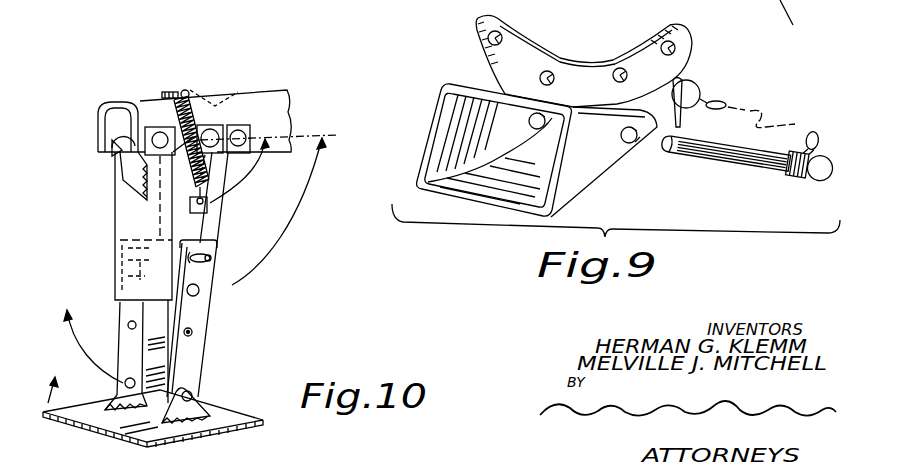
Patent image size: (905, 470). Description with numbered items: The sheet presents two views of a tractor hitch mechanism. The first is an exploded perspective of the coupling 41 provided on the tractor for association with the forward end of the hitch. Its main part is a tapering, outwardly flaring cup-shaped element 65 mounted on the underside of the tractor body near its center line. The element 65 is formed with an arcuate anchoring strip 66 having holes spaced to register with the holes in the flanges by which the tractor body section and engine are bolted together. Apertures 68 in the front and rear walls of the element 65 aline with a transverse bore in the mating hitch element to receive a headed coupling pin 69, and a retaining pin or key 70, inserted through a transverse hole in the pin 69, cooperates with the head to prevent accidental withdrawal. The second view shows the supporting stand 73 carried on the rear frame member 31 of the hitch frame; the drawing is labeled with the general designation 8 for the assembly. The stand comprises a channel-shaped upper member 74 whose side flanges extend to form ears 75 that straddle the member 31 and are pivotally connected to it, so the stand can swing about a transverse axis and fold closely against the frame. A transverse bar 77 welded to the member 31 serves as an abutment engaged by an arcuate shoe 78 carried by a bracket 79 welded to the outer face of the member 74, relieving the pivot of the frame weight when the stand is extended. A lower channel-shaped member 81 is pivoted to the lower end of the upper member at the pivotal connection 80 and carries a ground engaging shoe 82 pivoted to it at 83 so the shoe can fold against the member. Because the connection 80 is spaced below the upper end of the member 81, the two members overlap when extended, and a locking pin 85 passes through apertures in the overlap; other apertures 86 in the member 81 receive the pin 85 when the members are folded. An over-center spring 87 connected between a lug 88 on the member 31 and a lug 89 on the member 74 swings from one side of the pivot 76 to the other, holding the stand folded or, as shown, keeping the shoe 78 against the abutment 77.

In FIG. 10, the jack assembly 8 is at (215, 105).
In FIG. 10, the rear frame member 31 is at (263, 92).
In FIG. 9, the coupling 41 is at (444, 63).
In FIG. 9, the cup-shaped element 65 is at (593, 177).
In FIG. 9, the arcuate anchoring strip 66 is at (523, 48).
In FIG. 9, the apertures 68 is at (533, 128).
In FIG. 9, the headed coupling pin 69 is at (741, 158).
In FIG. 9, the retaining pin or key 70 is at (691, 88).
In FIG. 10, the supporting stand 73 is at (232, 285).
In FIG. 10, the channel-shaped upper member 74 is at (115, 210).
In FIG. 10, the ears 75 is at (233, 123).
In FIG. 10, the pivot 76 is at (211, 137).
In FIG. 10, the transverse bar 77 is at (118, 132).
In FIG. 10, the arcuate shoe 78 is at (112, 145).
In FIG. 10, the bracket 79 is at (118, 173).
In FIG. 10, the pivotal connection 80 is at (199, 294).
In FIG. 10, the lower channel-shaped member 81 is at (197, 359).
In FIG. 10, the ground engaging shoe 82 is at (216, 431).
In FIG. 10, the shoe pivot 83 is at (199, 396).
In FIG. 10, the locking pin 85 is at (211, 256).
In FIG. 10, the apertures 86 is at (132, 321).
In FIG. 10, the over-center spring 87 is at (181, 112).
In FIG. 10, the lug 88 is at (188, 92).
In FIG. 10, the lug 89 is at (195, 203).